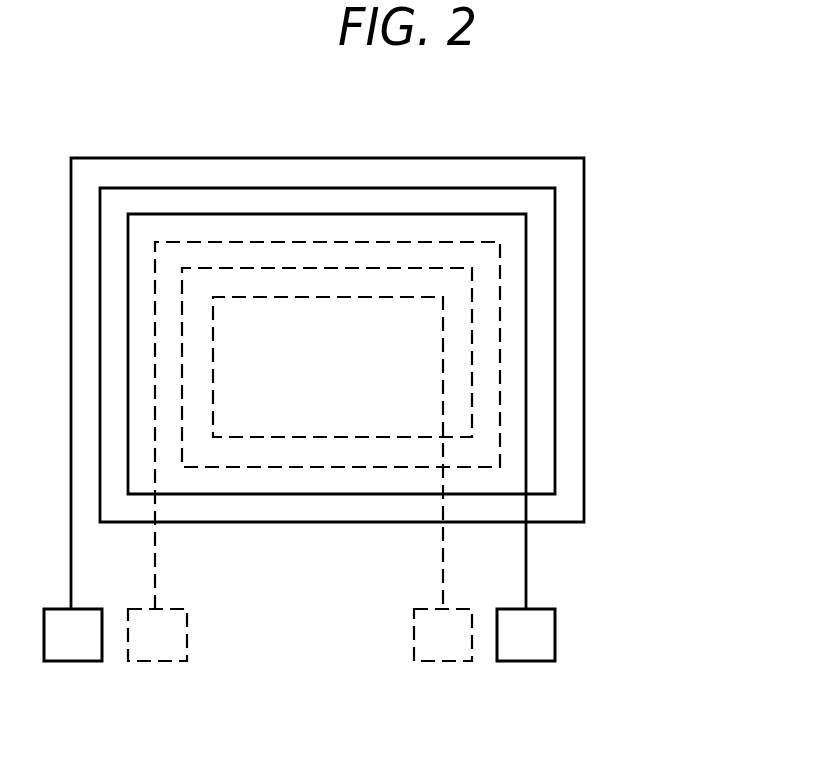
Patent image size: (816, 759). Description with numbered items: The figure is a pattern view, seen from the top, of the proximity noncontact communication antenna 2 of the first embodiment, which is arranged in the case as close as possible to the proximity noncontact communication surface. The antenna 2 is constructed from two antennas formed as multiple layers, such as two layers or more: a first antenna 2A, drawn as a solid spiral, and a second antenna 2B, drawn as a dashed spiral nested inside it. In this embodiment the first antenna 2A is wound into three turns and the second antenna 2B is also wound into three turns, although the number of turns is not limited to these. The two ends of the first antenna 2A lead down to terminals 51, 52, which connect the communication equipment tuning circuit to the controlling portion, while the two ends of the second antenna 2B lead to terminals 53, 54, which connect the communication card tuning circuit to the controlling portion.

The proximity noncontact communication antenna 2 is at (710, 177).
The first antenna 2A is at (585, 233).
The second antenna 2B is at (500, 412).
The terminal 51 is at (73, 661).
The terminal 52 is at (526, 661).
The terminal 53 is at (163, 661).
The terminal 54 is at (450, 661).